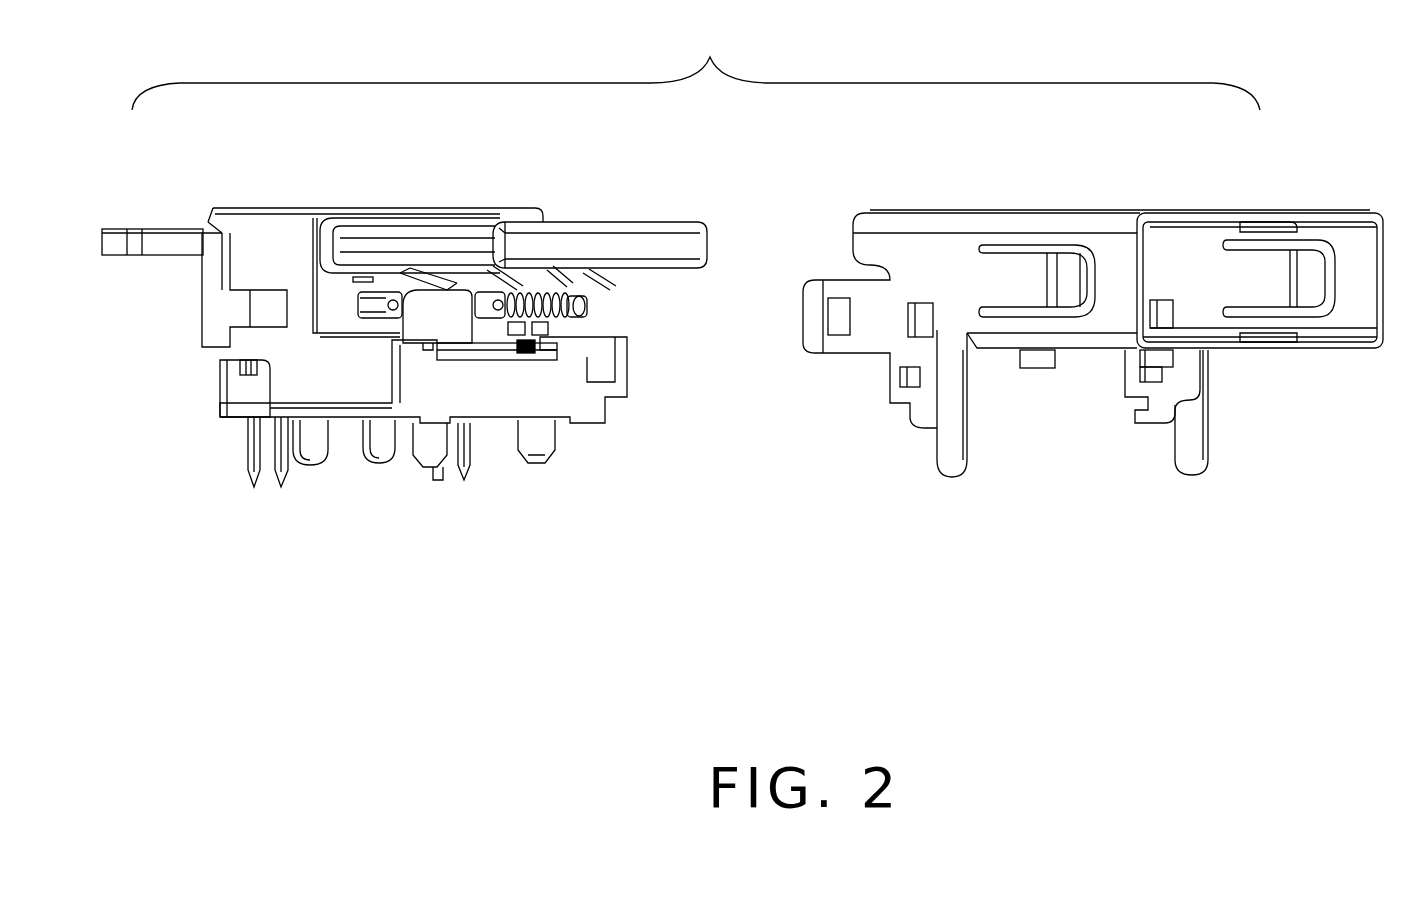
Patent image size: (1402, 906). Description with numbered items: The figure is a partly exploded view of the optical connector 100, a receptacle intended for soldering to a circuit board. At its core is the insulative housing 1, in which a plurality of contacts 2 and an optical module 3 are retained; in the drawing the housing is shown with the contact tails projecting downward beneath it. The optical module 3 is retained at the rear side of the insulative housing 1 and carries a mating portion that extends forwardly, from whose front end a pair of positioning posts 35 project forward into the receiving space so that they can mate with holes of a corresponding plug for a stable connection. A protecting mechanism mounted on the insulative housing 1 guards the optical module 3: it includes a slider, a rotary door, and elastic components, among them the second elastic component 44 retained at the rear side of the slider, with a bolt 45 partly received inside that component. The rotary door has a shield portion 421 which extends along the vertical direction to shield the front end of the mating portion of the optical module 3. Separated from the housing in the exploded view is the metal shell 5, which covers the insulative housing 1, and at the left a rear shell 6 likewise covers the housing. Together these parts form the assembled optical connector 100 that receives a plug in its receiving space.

The optical connector 100 is at (696, 65).
The insulative housing 1 is at (360, 378).
The contacts 2 is at (475, 280).
The optical module 3 is at (173, 245).
The positioning posts 35 is at (378, 305).
The second elastic component 44 is at (533, 280).
The bolt 45 is at (578, 305).
The shield portion 421 is at (435, 325).
The metal shell 5 is at (1105, 180).
The rear shell 6 is at (242, 392).